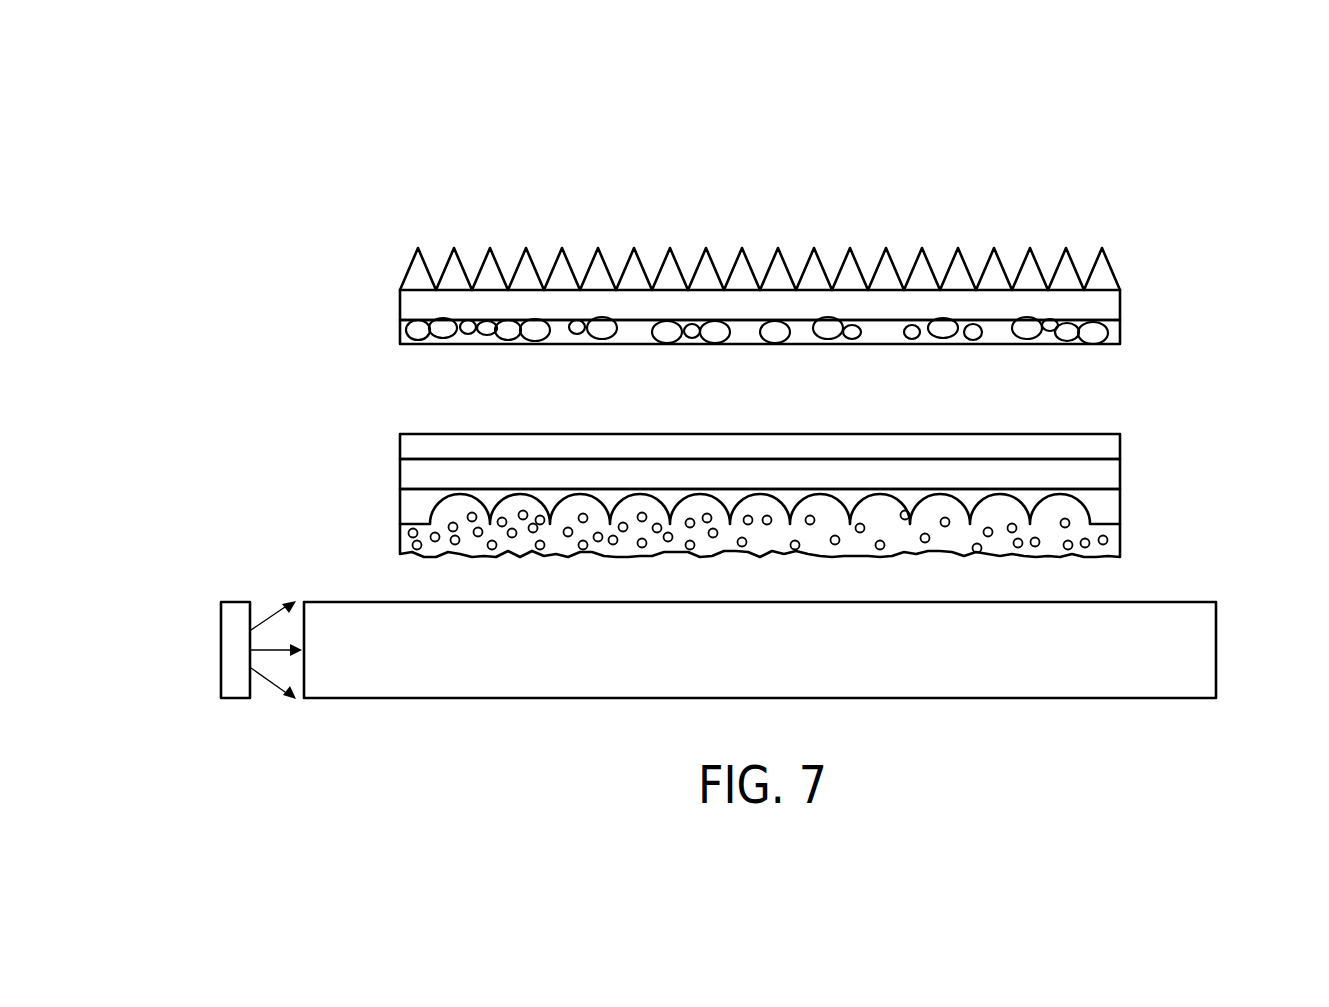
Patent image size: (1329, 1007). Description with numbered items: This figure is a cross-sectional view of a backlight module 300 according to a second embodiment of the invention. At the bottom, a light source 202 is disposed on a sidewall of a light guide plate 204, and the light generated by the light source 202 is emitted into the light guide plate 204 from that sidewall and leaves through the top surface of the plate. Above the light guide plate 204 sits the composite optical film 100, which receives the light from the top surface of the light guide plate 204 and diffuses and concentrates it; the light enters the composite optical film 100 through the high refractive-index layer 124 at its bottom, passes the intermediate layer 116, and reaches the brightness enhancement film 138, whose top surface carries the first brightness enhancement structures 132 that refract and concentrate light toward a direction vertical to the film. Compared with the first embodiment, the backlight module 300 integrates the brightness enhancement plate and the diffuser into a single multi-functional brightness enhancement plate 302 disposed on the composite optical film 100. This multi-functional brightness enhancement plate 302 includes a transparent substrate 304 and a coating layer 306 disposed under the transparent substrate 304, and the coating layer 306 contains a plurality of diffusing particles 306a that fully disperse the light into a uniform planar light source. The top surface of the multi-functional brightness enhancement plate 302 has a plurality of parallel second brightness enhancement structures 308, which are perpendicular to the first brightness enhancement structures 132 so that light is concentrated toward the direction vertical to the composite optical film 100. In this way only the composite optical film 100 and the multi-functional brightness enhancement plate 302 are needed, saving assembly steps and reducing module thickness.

The backlight module 300 is at (1190, 165).
The multi-functional brightness enhancement plate 302 is at (1223, 248).
The transparent substrate 304 is at (1117, 307).
The coating layer 306 is at (1118, 336).
The diffusing particles 306a is at (1070, 336).
The second brightness enhancement structures 308 is at (1124, 256).
The composite optical film 100 is at (1223, 433).
The first brightness enhancement structures 132 is at (1128, 439).
The brightness enhancement film 138 is at (1117, 473).
The intermediate layer 116 is at (1117, 509).
The high refractive-index layer 124 is at (1117, 541).
The light source 202 is at (234, 600).
The light guide plate 204 is at (1217, 648).